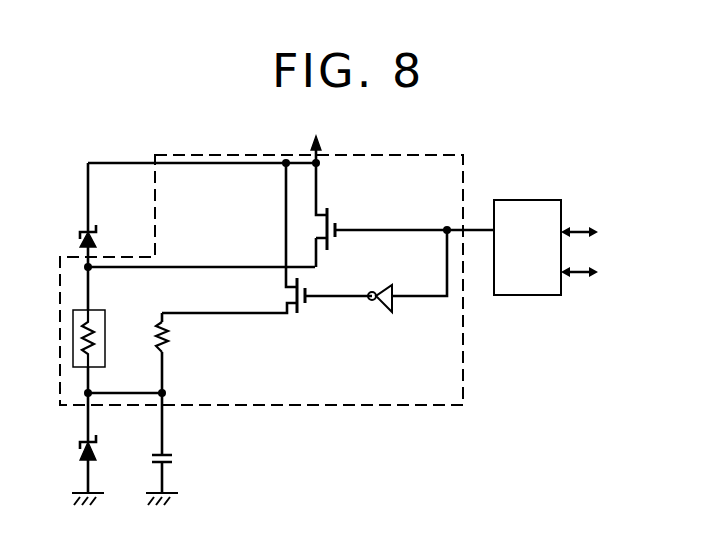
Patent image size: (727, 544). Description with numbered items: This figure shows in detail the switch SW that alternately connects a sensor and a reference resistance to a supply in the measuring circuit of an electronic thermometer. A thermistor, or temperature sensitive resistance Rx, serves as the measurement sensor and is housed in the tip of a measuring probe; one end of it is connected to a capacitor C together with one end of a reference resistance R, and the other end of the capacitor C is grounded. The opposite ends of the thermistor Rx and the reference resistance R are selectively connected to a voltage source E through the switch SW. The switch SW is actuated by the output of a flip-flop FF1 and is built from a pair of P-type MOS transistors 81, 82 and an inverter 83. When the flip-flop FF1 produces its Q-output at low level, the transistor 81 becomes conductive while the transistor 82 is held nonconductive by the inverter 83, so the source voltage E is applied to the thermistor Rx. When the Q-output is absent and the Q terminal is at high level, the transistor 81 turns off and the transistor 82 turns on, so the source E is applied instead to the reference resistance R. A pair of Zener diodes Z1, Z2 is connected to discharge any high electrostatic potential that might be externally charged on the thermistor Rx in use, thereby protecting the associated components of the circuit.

The voltage source E is at (315, 138).
The Zener diode Z1 is at (93, 230).
The Zener diode Z2 is at (100, 443).
The thermistor RX is at (73, 351).
The reference resistance R is at (168, 338).
The capacitor C is at (173, 459).
The P-type MOS transistor 81 is at (330, 213).
The P-type MOS transistor 82 is at (298, 307).
The inverter 83 is at (377, 302).
The flip-flop FF1 is at (518, 200).
The switch SW is at (422, 405).